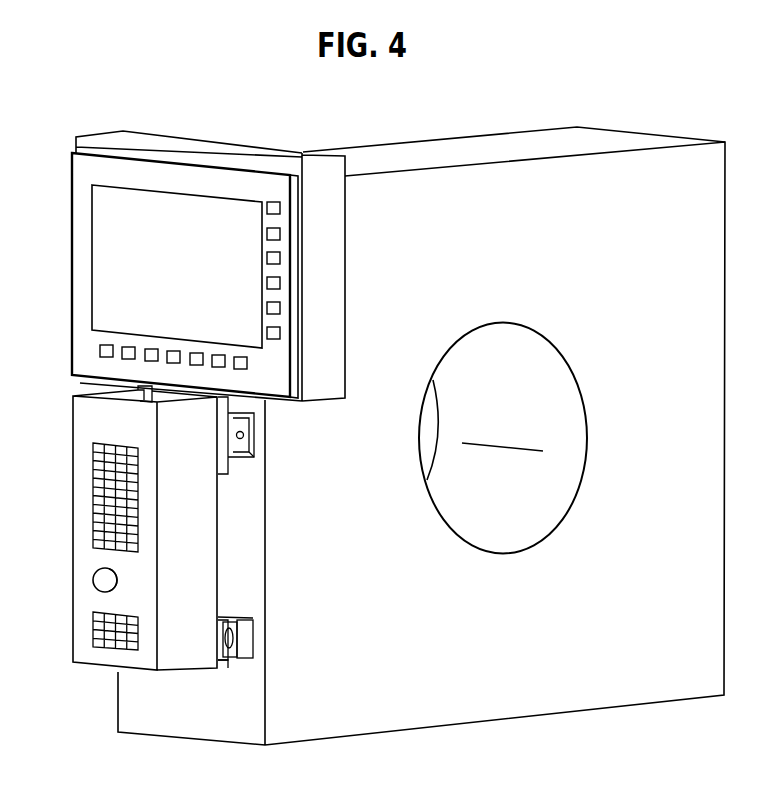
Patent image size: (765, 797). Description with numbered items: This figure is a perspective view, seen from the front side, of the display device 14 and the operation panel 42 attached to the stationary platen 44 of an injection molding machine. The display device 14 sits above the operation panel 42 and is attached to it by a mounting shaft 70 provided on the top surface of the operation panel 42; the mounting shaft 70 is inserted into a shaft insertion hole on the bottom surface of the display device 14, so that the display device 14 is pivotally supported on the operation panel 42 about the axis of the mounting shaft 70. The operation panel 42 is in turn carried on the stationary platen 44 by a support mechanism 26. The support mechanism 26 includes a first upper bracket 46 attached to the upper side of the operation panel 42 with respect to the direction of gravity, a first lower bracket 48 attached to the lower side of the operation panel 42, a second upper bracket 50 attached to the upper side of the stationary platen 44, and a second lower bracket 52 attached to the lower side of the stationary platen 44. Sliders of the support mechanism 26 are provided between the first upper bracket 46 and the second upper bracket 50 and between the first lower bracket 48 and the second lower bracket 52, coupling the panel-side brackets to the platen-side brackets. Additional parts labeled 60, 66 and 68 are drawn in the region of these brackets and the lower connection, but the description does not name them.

The display device 14 is at (330, 261).
The support mechanism 26 is at (239, 678).
The operation panel 42 is at (85, 556).
The stationary platen 44 is at (598, 690).
The first upper bracket 46 is at (222, 460).
The first lower bracket 48 is at (225, 668).
The second upper bracket 50 is at (253, 449).
The second lower bracket 52 is at (245, 647).
The hanging bracket 60 is at (245, 433).
The connector terminal 66 is at (227, 641).
The connector housing 68 is at (248, 622).
The mounting shaft 70 is at (138, 402).